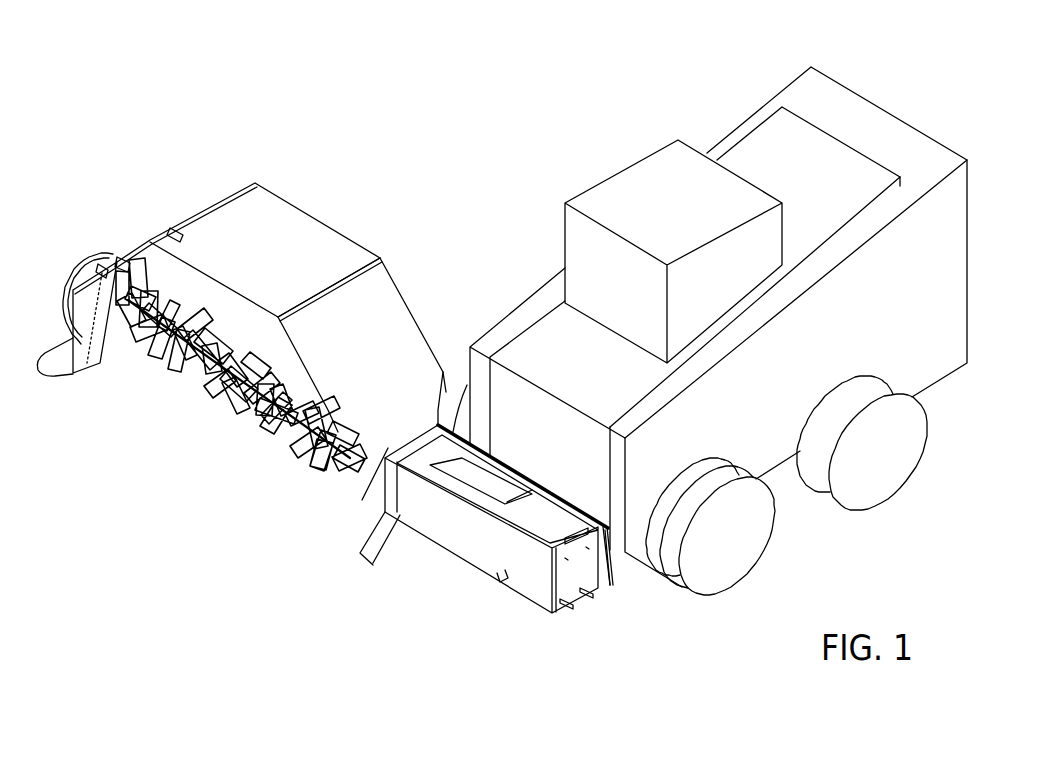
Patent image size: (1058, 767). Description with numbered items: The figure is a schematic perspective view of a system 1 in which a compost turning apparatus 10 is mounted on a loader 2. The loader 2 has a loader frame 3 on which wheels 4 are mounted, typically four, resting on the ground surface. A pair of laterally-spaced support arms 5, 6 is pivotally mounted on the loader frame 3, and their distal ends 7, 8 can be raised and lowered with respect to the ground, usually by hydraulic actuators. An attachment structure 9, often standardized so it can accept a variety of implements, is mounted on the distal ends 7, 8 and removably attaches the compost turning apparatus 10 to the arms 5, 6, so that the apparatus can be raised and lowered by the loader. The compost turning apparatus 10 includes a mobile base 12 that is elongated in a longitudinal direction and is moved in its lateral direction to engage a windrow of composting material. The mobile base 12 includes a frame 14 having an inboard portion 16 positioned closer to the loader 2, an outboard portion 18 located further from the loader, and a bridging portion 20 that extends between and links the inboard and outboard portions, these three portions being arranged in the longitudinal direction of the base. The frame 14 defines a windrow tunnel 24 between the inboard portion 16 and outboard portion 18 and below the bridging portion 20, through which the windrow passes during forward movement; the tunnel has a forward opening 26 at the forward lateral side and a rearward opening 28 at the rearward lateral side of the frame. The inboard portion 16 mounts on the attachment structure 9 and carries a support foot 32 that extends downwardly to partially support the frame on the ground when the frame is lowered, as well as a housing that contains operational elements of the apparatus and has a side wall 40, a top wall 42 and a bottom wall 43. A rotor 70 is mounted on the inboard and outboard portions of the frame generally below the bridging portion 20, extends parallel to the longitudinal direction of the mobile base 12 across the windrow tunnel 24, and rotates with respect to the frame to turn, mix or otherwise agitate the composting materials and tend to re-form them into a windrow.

The system 1 is at (272, 72).
The loader 2 is at (887, 62).
The loader frame 3 is at (742, 117).
The wheels 4 is at (738, 572).
The support arm 5 is at (876, 218).
The support arm 6 is at (762, 143).
The distal end 7 is at (629, 554).
The distal end 8 is at (490, 340).
The attachment structure 9 is at (608, 587).
The compost turning apparatus 10 is at (238, 602).
The mobile base 12 is at (421, 266).
The frame 14 is at (322, 202).
The inboard portion 16 is at (444, 578).
The outboard portion 18 is at (52, 402).
The bridging portion 20 is at (369, 219).
The windrow tunnel 24 is at (304, 462).
The forward opening 26 is at (151, 414).
The rearward opening 28 is at (414, 296).
The support foot 32 is at (587, 600).
The side wall 40 is at (495, 550).
The top wall 42 is at (477, 482).
The bottom wall 43 is at (532, 588).
The rotor 70 is at (200, 426).